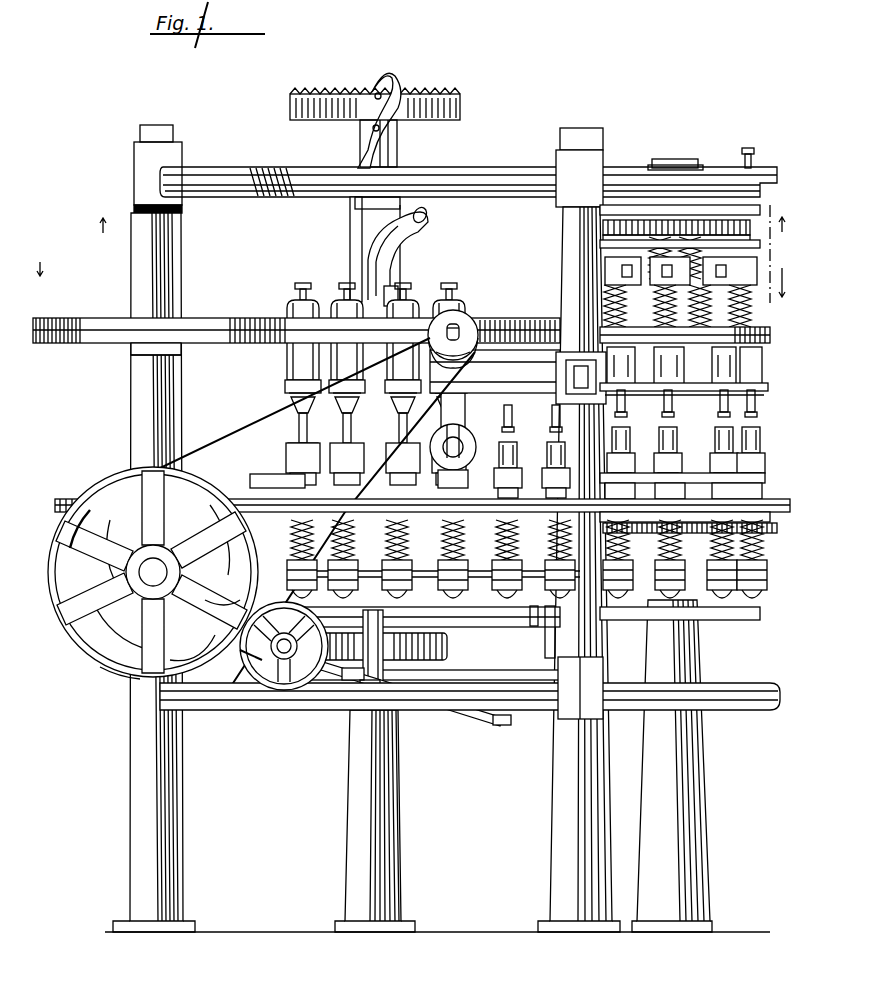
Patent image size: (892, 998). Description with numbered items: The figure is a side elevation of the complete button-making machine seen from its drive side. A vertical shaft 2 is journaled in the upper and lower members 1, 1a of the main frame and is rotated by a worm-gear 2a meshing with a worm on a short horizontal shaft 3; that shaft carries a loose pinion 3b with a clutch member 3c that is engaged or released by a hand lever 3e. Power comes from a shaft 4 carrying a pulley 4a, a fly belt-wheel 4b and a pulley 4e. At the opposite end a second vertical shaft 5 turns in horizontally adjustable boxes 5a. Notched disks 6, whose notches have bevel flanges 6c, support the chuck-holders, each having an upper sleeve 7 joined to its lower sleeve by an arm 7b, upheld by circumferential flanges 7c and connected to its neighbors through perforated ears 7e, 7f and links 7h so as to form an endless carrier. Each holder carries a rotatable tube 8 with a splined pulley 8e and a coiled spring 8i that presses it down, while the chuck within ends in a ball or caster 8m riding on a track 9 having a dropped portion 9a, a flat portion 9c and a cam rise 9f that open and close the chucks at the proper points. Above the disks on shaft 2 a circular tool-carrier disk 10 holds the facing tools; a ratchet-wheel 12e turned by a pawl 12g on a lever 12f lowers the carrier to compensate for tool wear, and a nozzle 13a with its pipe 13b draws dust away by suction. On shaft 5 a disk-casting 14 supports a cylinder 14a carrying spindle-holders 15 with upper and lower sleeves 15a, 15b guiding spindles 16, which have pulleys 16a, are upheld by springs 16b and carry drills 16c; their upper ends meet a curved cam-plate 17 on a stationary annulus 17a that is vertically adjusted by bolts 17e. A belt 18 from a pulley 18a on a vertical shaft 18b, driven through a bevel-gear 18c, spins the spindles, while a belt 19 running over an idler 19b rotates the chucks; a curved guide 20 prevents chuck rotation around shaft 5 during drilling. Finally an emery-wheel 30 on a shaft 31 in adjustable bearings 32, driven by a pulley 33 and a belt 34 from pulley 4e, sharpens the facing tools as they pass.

The upper member of main frame 1 is at (238, 168).
The lower member of main frame 1a is at (270, 700).
The vertical shaft 2 is at (366, 232).
The worm-gear 2a is at (448, 648).
The short horizontal shaft 3 is at (284, 690).
The loose pinion 3b is at (248, 668).
The clutch member 3c is at (185, 612).
The lever 3e is at (330, 704).
The shaft 4 is at (80, 655).
The pulley 4a is at (145, 566).
The fly belt-wheel 4b is at (118, 672).
The pulley 4e is at (70, 548).
The second vertical shaft 5 is at (790, 630).
The boxes 5a is at (705, 162).
The disks 6 is at (800, 420).
The bevel flanges 6c is at (300, 432).
The upper sleeve 7 is at (810, 277).
The arm 7b is at (545, 615).
The circumferential flanges 7c is at (765, 478).
The perforated ears 7e is at (490, 436).
The perforated ears 7f is at (520, 612).
The links 7h is at (550, 451).
The rotatable tubes 8 is at (800, 207).
The pulley 8e is at (765, 507).
The coiled spring 8i is at (768, 521).
The ball or caster 8m is at (610, 604).
The track or camway 9 is at (673, 158).
The dropped portion of track 9a is at (396, 618).
The flat portion of track 9c is at (360, 647).
The cam rise 9f is at (425, 649).
The circular disk 10 is at (375, 92).
The ratchet-wheel 12e is at (456, 94).
The lever 12f is at (354, 143).
The pawl 12g is at (388, 92).
The nozzle 13a is at (396, 296).
The pipe 13b is at (426, 233).
The disk-casting 14 is at (752, 386).
The cylinder 14a is at (760, 330).
The spindle-holders 15 is at (765, 250).
The upper sleeves 15a is at (760, 268).
The lower sleeves 15b is at (765, 370).
The spindles 16 is at (600, 248).
The pulleys 16a is at (765, 348).
The springs 16b is at (758, 302).
The drills 16c is at (752, 430).
The curved cam-plate 17 is at (750, 205).
The stationary annulus 17a is at (632, 212).
The bolts 17e is at (758, 158).
The belt 18 is at (500, 336).
The pulley 18a is at (105, 346).
The vertical shaft 18b is at (150, 392).
The bevel-gear 18c is at (273, 470).
The belt 19 is at (488, 520).
The idler 19b is at (575, 516).
The curved guide 20 is at (775, 530).
The emery-wheel 30 is at (472, 424).
The shaft 31 is at (464, 312).
The adjustable bearings 32 is at (560, 376).
The pulley 33 is at (474, 324).
The belt or cord 34 is at (287, 519).